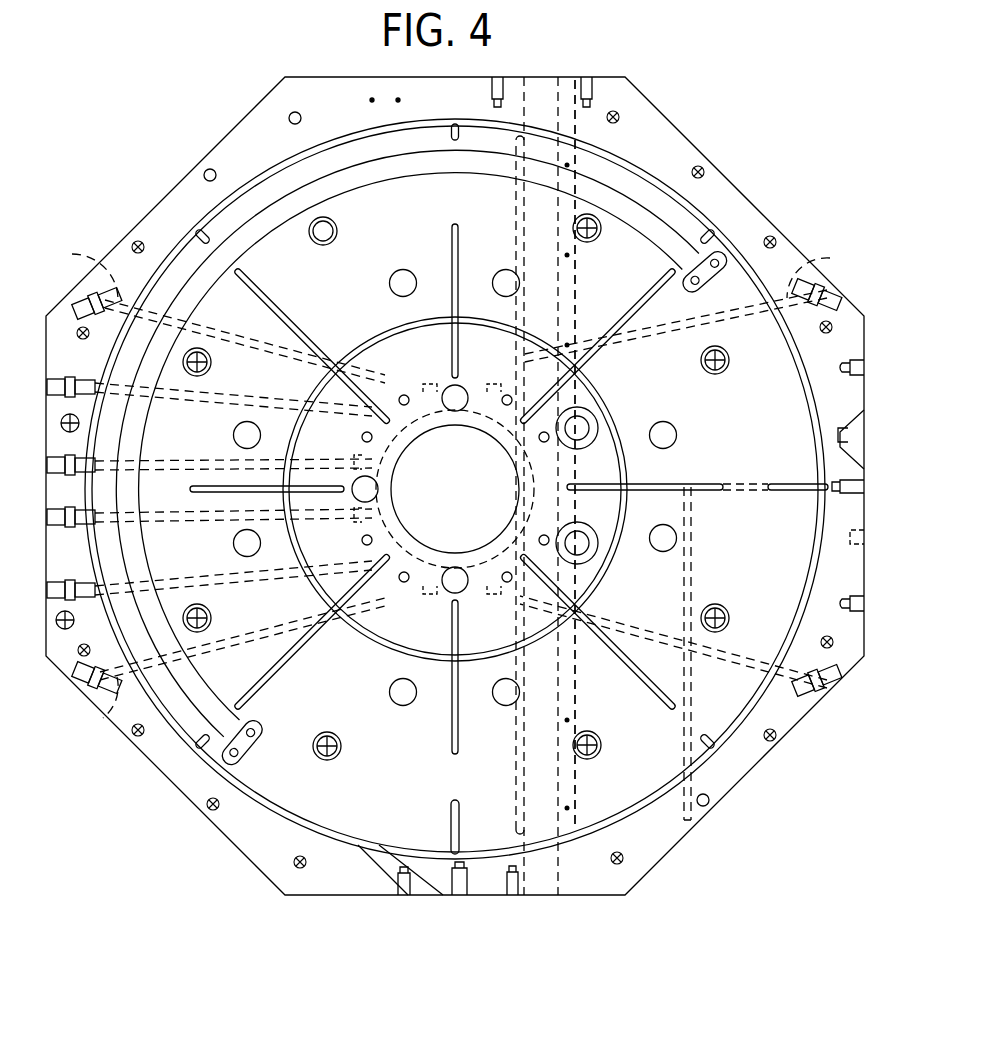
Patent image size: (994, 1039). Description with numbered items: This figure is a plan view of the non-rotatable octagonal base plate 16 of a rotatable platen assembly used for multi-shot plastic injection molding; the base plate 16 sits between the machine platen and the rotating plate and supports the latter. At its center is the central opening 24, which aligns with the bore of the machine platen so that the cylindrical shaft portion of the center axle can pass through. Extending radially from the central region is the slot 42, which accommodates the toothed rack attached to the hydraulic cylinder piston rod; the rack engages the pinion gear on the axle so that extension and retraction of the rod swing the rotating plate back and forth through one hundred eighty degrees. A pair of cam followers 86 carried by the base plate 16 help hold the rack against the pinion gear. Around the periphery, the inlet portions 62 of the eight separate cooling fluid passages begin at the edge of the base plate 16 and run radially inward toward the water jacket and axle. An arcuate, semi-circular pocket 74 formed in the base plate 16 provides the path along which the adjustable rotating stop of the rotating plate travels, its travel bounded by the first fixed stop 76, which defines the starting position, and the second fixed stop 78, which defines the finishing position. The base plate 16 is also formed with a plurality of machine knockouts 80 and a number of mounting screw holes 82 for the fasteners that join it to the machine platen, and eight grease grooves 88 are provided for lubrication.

The octagonal base plate 16 is at (726, 170).
The central opening 24 is at (424, 545).
The radially extending slot 42 is at (576, 291).
The inlet portion 62 is at (80, 256).
The arcuate pocket 74 is at (266, 200).
The first fixed stop 76 is at (701, 266).
The second fixed stop 78 is at (238, 740).
The machine knockouts 80 is at (400, 278).
The mounting screw holes 82 is at (323, 233).
The cam followers 86 is at (578, 428).
The grease grooves 88 is at (459, 250).